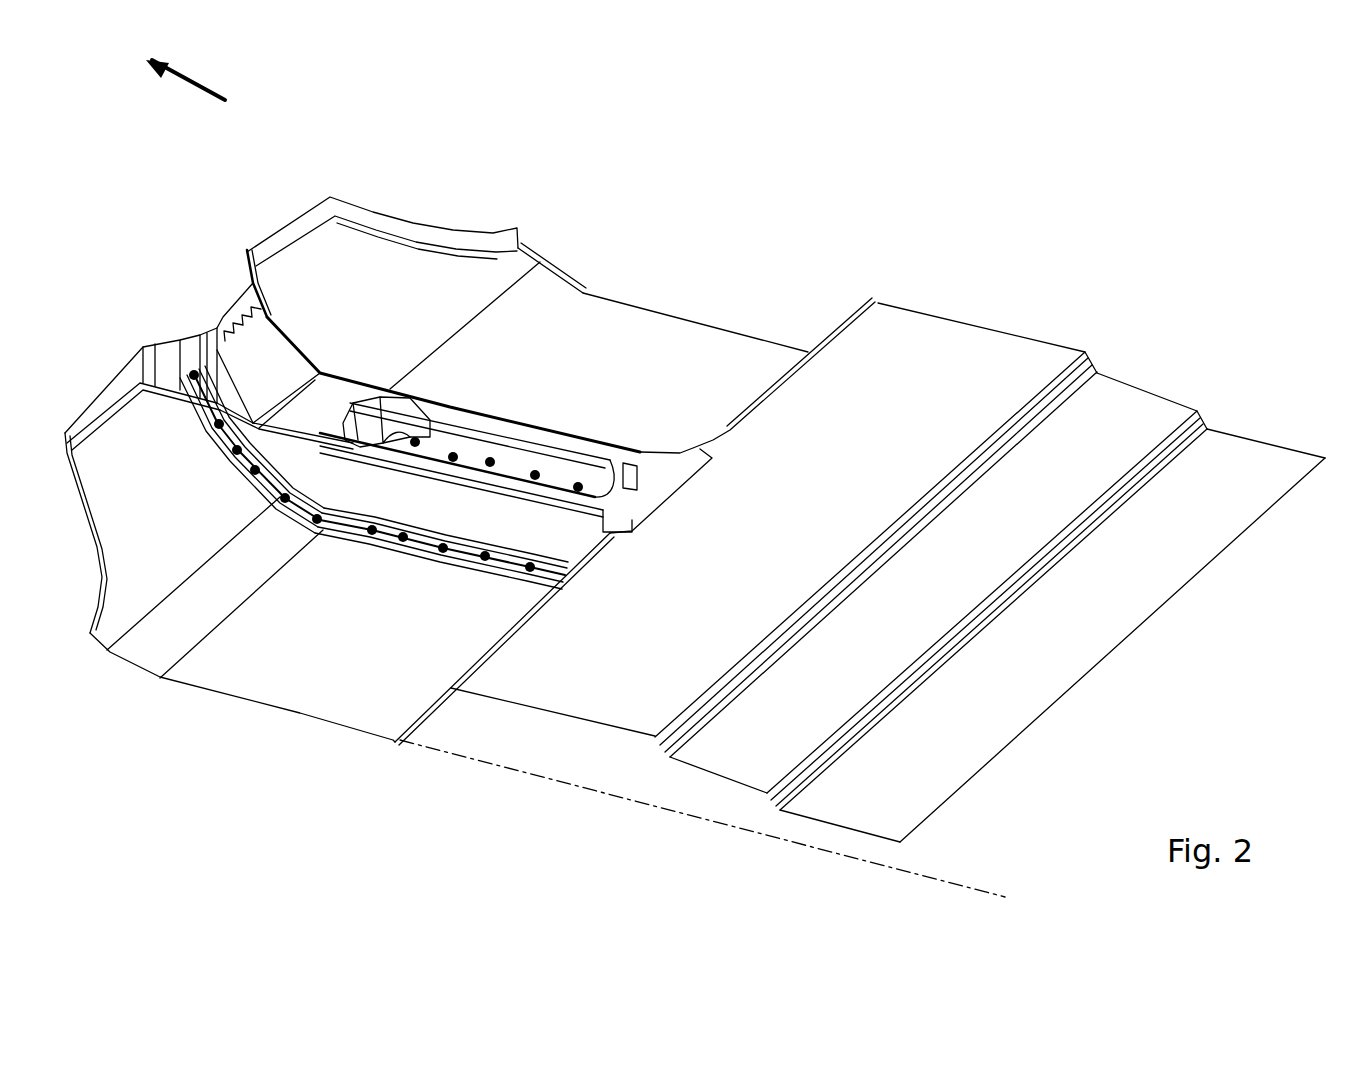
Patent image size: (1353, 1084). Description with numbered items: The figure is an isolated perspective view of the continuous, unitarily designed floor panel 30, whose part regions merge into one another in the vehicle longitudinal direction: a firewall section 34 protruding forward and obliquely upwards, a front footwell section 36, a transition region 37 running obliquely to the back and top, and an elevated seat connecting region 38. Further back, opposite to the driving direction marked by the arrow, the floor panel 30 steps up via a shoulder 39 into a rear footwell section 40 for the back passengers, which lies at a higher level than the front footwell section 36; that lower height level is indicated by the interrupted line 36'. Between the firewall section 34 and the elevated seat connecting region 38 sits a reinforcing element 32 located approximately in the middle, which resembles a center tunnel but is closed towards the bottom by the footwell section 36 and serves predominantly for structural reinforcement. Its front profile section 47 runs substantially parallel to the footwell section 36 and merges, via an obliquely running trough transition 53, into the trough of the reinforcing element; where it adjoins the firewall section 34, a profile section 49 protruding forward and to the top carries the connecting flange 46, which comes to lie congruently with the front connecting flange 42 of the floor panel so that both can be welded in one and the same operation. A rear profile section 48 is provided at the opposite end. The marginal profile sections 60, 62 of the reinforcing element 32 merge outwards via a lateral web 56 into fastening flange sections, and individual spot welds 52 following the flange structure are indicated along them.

The floor panel 30 is at (797, 284).
The reinforcing element 32 is at (526, 375).
The firewall section 34 is at (380, 275).
The front footwell section 36 is at (695, 273).
The interrupted line 36' is at (702, 818).
The transition region 37 is at (768, 392).
The seat connecting region 38 is at (940, 335).
The shoulder 39 is at (1130, 395).
The rear footwell section 40 is at (1250, 470).
The front connecting flange 42 is at (116, 373).
The connecting flange 46 is at (232, 308).
The front profile section 47 is at (343, 382).
The rear profile section 48 is at (680, 475).
The profile section 49 is at (281, 360).
The spot welds 52 is at (455, 453).
The trough transition 53 is at (386, 415).
The lateral web 56 is at (338, 485).
The marginal profile section 60 is at (478, 490).
The marginal profile section 62 is at (578, 440).